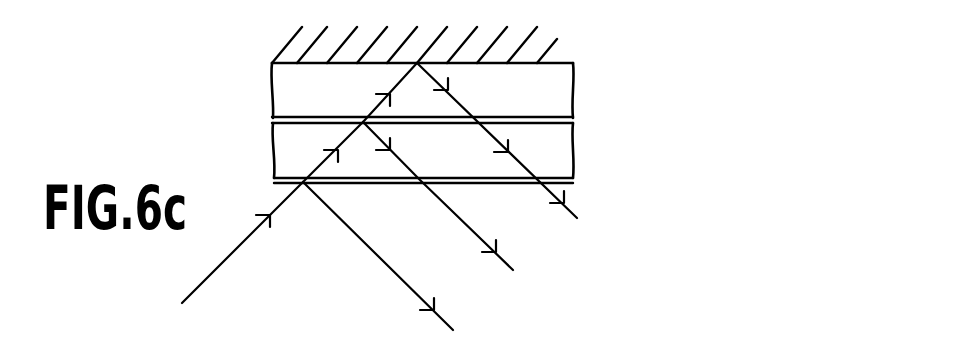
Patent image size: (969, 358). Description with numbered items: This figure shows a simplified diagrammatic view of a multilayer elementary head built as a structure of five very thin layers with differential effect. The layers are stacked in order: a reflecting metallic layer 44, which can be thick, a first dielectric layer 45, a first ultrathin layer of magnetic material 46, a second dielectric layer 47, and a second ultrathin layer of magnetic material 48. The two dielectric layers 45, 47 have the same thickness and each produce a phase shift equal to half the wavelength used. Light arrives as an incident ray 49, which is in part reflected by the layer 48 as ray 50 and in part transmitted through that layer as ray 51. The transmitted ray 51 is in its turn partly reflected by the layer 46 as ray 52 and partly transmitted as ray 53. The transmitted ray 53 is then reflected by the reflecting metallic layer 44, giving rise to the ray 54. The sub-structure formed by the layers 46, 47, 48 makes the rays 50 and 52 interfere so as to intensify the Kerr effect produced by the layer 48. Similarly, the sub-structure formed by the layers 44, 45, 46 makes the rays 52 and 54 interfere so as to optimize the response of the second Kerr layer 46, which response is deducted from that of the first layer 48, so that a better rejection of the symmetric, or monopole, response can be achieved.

The reflecting metallic layer 44 is at (555, 41).
The first dielectric layer 45 is at (566, 85).
The first ultrathin layer of magnetic material 46 is at (573, 112).
The second dielectric layer 47 is at (562, 143).
The second ultrathin layer of magnetic material 48 is at (573, 183).
The incident ray 49 is at (230, 255).
The reflected ray 50 is at (370, 248).
The transmitted ray 51 is at (326, 148).
The reflected ray 52 is at (432, 193).
The transmitted ray 53 is at (378, 97).
The ray reflected by the reflecting metallic layer 54 is at (488, 135).